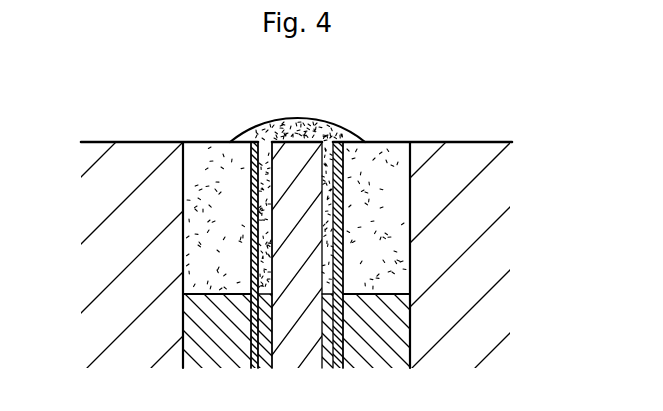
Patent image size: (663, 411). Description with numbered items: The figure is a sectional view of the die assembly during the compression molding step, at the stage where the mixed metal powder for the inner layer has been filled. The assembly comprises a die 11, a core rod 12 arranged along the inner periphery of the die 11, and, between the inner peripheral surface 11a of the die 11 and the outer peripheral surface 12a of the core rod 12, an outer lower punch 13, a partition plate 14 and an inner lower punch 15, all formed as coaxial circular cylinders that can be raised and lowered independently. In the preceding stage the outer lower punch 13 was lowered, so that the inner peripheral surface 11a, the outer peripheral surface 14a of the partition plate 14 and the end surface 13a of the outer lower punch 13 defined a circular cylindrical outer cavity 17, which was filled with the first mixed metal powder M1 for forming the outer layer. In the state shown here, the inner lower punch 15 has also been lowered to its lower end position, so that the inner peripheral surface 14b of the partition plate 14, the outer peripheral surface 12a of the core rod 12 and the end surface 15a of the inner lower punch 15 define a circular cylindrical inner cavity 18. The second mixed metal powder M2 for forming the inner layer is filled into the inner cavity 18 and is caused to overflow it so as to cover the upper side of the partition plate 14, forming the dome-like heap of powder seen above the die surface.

The die 11 is at (465, 158).
The inner peripheral surface of the die 11a is at (185, 178).
The core rod 12 is at (303, 347).
The outer peripheral surface of the core rod 12a is at (250, 213).
The outer lower punch 13 is at (213, 330).
The end surface of the outer lower punch 13a is at (212, 289).
The partition plate 14 is at (250, 337).
The outer peripheral surface of the partition plate 14a is at (251, 167).
The inner peripheral surface of the partition plate 14b is at (272, 160).
The inner lower punch 15 is at (272, 340).
The end surface of the inner lower punch 15a is at (252, 268).
The outer cavity 17 is at (370, 185).
The inner cavity 18 is at (327, 152).
The first mixed metal powder M1 is at (393, 223).
The second mixed metal powder M2 is at (343, 256).